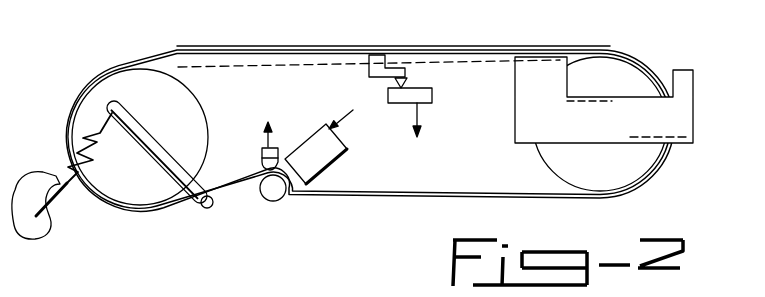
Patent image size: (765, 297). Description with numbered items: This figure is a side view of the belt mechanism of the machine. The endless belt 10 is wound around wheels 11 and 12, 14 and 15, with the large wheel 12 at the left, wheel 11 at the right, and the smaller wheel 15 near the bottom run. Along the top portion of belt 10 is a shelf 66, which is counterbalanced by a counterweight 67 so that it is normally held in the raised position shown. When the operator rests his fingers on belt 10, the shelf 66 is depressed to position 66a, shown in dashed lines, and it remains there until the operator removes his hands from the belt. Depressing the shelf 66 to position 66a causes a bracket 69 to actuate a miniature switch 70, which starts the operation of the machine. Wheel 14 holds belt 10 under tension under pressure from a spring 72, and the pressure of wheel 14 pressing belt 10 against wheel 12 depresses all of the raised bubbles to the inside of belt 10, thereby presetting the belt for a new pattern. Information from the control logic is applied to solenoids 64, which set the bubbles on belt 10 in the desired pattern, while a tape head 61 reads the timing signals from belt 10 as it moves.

The belt 10 is at (146, 62).
The wheel 11 is at (547, 165).
The wheel 12 is at (207, 128).
The wheel 14 is at (208, 212).
The wheel 15 is at (279, 204).
The tape head 61 is at (277, 148).
The solenoids 64 is at (341, 155).
The shelf 66 is at (207, 32).
The depressed position of shelf 66a is at (230, 66).
The counterweight 67 is at (673, 124).
The bracket 69 is at (405, 72).
The miniature switch 70 is at (432, 97).
The spring 72 is at (58, 185).